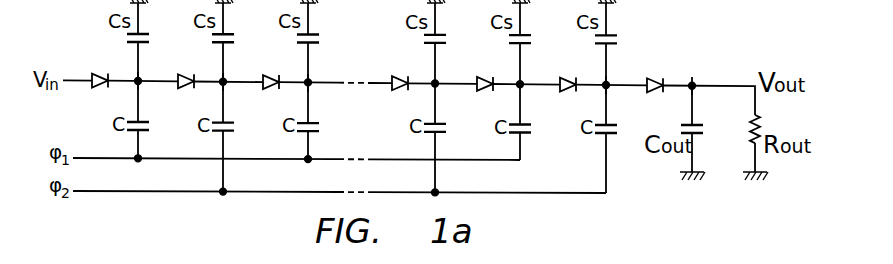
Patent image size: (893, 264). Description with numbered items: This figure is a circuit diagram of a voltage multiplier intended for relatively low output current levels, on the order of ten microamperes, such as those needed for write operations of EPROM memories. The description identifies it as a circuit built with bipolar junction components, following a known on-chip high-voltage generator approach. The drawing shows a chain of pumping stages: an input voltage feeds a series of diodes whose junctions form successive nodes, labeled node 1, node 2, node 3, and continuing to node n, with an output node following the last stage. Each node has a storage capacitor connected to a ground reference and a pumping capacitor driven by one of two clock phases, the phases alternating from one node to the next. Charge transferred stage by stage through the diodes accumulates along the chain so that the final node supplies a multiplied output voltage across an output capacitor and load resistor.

The first pump stage node 1 is at (144, 76).
The second pump stage node 2 is at (229, 77).
The third pump stage node 3 is at (314, 77).
The nth pump stage node n is at (612, 79).